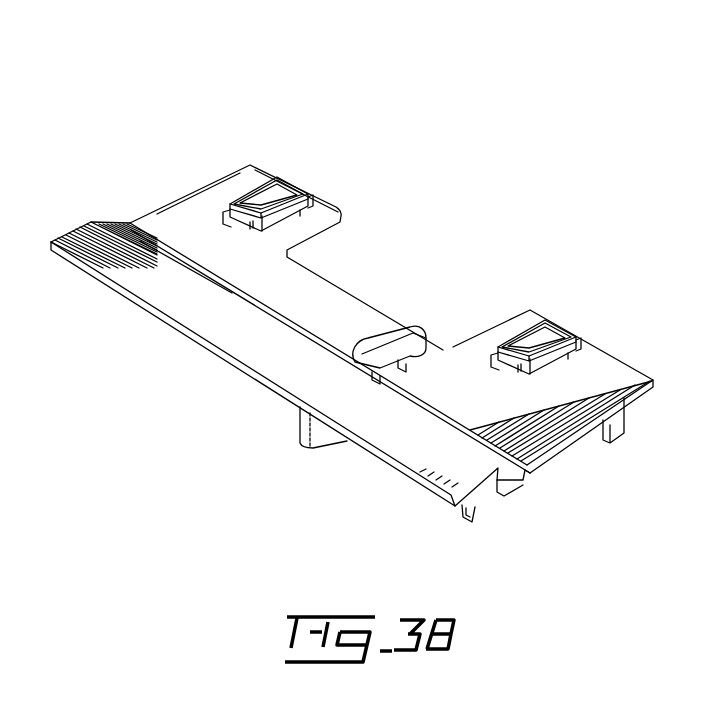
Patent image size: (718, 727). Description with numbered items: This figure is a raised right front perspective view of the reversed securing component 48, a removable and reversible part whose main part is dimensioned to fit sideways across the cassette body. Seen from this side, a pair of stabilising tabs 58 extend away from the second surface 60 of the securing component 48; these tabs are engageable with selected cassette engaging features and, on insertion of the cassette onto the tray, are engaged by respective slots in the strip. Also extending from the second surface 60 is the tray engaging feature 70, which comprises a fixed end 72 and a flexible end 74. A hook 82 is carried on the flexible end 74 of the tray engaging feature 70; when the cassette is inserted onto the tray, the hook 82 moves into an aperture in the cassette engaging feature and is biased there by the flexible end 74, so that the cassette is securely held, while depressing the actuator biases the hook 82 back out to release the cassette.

The securing component 48 is at (452, 217).
The stabilising tabs 58 is at (275, 193).
The second surface 60 is at (250, 337).
The tray engaging feature 70 is at (395, 378).
The fixed end 72 is at (322, 357).
The flexible end 74 is at (417, 342).
The hook 82 is at (421, 356).